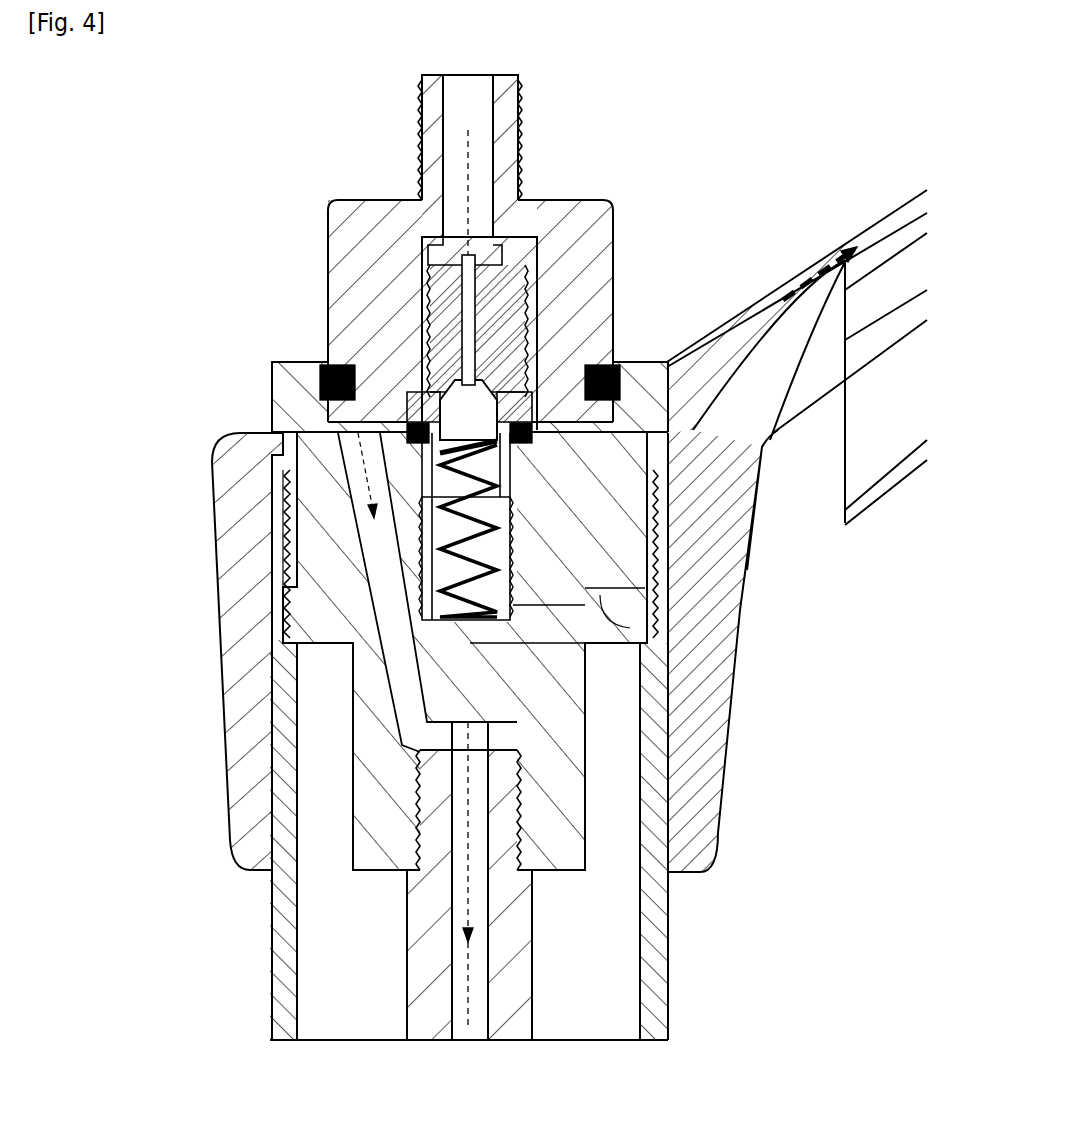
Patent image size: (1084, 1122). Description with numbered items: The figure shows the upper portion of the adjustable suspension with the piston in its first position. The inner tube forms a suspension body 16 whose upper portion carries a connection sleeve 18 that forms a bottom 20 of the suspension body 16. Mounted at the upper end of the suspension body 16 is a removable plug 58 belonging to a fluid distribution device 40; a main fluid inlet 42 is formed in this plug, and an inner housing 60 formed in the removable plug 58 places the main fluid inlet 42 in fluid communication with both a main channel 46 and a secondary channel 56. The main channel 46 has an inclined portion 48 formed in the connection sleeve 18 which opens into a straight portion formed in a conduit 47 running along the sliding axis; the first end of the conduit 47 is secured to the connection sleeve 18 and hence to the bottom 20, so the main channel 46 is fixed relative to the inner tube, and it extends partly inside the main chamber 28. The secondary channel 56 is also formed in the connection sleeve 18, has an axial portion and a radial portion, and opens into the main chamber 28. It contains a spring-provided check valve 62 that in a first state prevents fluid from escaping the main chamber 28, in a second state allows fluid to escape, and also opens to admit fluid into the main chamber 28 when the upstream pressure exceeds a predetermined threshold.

The suspension body 16 is at (187, 775).
The connection sleeve 18 is at (600, 473).
The bottom 20 is at (590, 640).
The main chamber 28 is at (600, 925).
The fluid distribution device 40 is at (222, 364).
The main fluid inlet 42 is at (520, 92).
The main channel 46 is at (540, 736).
The conduit 47 is at (430, 930).
The inclined portion 48 is at (360, 537).
The secondary channel 56 is at (492, 548).
The removable plug 58 is at (370, 215).
The inner housing 60 is at (547, 390).
The check valve 62 is at (463, 412).